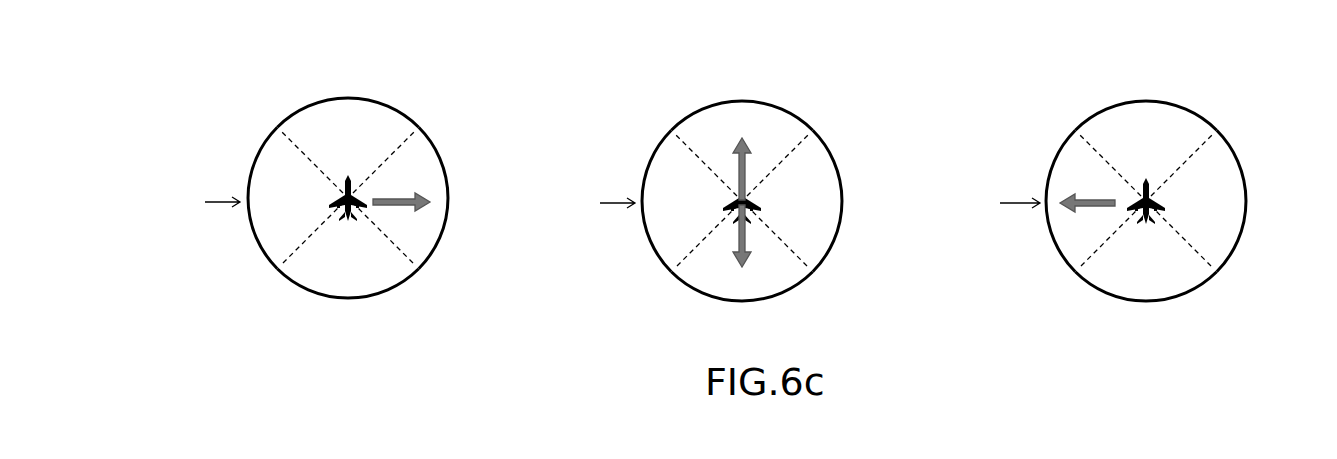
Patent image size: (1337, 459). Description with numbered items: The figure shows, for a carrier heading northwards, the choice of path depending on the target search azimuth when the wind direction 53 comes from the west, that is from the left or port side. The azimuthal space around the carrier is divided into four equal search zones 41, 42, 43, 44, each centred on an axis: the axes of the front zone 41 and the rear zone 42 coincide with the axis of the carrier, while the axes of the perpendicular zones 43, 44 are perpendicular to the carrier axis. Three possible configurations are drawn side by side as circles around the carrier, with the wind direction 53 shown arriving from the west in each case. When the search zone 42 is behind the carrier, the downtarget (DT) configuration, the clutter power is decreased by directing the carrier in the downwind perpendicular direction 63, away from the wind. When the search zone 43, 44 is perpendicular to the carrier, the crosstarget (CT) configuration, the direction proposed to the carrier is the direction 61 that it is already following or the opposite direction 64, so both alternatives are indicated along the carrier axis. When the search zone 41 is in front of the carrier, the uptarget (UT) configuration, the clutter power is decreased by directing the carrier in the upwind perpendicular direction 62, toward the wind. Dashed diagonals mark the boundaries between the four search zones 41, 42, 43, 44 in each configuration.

The front search zone 41 is at (372, 117).
The rear search zone 42 is at (380, 278).
The perpendicular search zone 43 is at (278, 168).
The perpendicular search zone 44 is at (422, 168).
The wind from the left 53 is at (220, 203).
The direction followed by the carrier 61 is at (740, 172).
The upwind perpendicular direction 62 is at (1093, 197).
The downwind perpendicular direction 63 is at (395, 203).
The opposite direction 64 is at (730, 237).